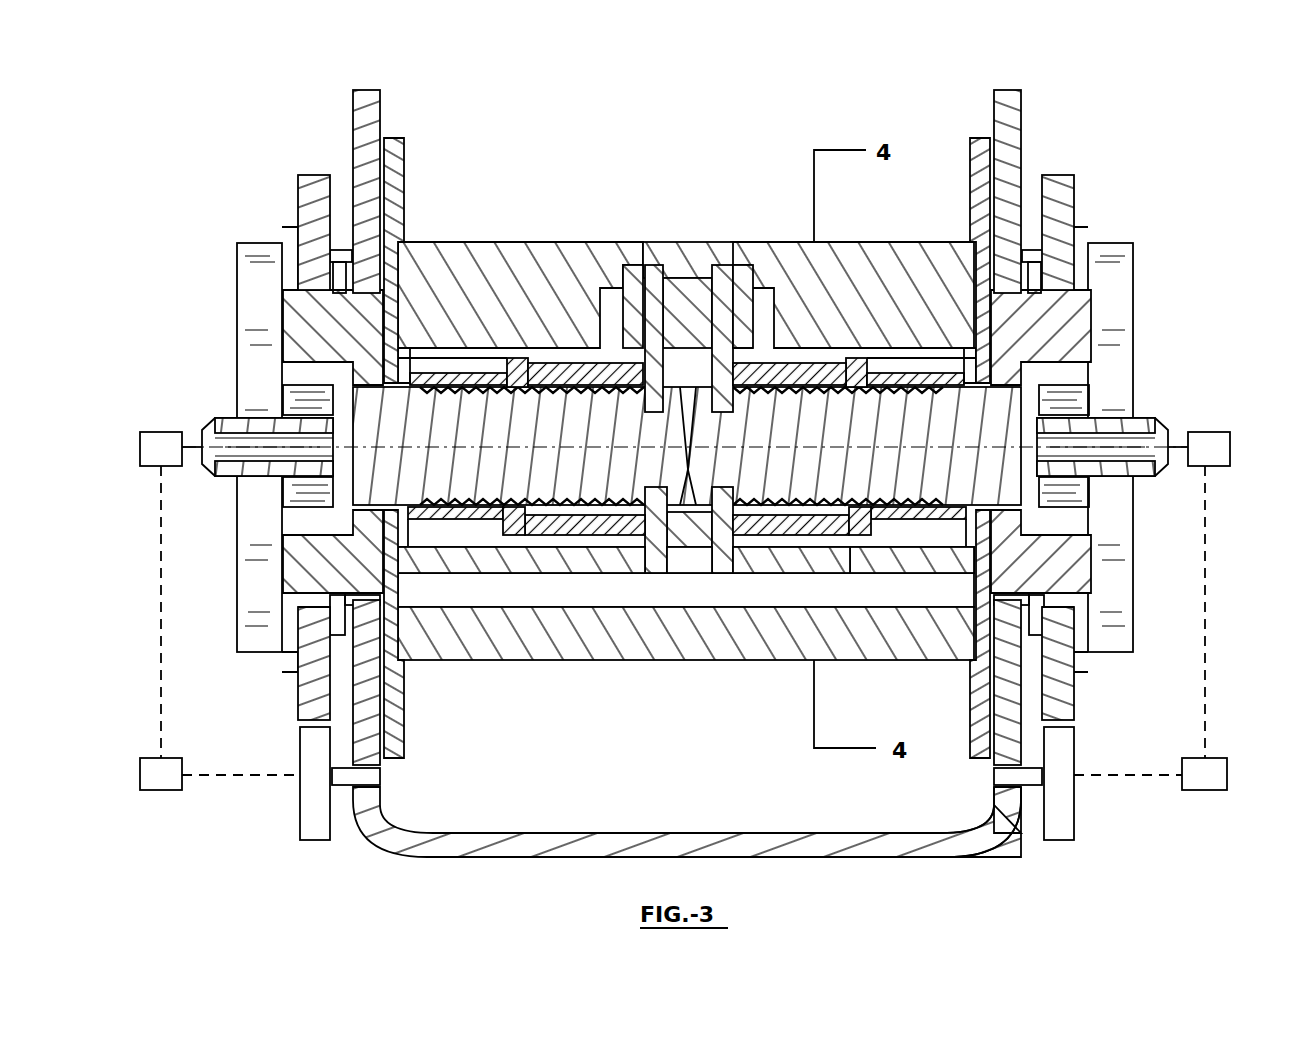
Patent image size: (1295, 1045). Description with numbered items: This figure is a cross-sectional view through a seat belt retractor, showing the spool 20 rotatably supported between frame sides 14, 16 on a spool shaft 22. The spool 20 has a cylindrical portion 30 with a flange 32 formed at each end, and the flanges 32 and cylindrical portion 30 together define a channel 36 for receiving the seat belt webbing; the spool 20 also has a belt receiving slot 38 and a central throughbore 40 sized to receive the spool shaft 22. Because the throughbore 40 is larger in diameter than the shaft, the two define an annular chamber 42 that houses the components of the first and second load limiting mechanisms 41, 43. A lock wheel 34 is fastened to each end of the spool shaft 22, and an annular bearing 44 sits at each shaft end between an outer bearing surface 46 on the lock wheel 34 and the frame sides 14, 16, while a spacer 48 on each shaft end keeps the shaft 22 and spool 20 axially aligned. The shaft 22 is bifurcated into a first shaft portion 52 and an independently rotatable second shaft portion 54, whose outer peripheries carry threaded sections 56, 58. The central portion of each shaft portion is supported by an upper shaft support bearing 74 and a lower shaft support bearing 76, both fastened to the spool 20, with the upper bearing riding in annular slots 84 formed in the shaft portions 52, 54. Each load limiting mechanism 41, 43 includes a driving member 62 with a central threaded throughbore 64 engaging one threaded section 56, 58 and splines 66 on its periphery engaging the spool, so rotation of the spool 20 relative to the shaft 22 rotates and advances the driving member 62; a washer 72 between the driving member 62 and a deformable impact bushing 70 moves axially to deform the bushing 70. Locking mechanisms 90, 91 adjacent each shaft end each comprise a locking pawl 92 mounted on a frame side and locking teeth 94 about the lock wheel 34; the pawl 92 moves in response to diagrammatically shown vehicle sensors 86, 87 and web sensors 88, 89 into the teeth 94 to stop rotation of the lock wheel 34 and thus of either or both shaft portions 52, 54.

The frame side 14 is at (356, 130).
The frame side 16 is at (1020, 146).
The spool 20 is at (580, 236).
The spool shaft 22 is at (312, 402).
The cylindrical portion 30 is at (846, 355).
The flange 32 is at (400, 138).
The lock wheel 34 is at (262, 342).
The channel 36 is at (645, 205).
The belt receiving slot 38 is at (930, 575).
The central throughbore 40 is at (636, 640).
The first load limiting mechanism 41 is at (454, 340).
The annular chamber 42 is at (452, 537).
The second load limiting mechanism 43 is at (889, 348).
The annular bearing 44 is at (343, 250).
The outer bearing surface 46 is at (336, 275).
The spacer 48 is at (938, 360).
The first shaft portion 52 is at (580, 535).
The second shaft portion 54 is at (830, 547).
The threaded section 56 is at (605, 573).
The threaded section 58 is at (780, 573).
The driving member 62 is at (608, 242).
The central threaded throughbore 64 is at (576, 362).
The splines 66 is at (778, 242).
The deformable impact bushing 70 is at (516, 540).
The washer 72 is at (517, 355).
The upper shaft support bearing 74 is at (684, 238).
The lower shaft support bearing 76 is at (690, 556).
The annular slots 84 is at (742, 410).
The vehicle sensor 86 is at (161, 790).
The vehicle sensor 87 is at (1227, 775).
The web sensor 88 is at (170, 468).
The web sensor 89 is at (1215, 466).
The locking mechanism 90 is at (254, 806).
The locking mechanism 91 is at (1110, 808).
The locking pawl 92 is at (315, 842).
The locking teeth 94 is at (305, 690).